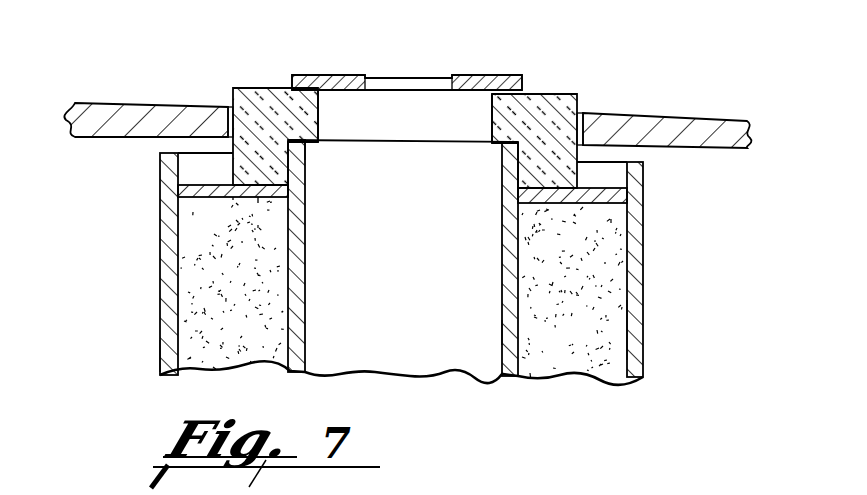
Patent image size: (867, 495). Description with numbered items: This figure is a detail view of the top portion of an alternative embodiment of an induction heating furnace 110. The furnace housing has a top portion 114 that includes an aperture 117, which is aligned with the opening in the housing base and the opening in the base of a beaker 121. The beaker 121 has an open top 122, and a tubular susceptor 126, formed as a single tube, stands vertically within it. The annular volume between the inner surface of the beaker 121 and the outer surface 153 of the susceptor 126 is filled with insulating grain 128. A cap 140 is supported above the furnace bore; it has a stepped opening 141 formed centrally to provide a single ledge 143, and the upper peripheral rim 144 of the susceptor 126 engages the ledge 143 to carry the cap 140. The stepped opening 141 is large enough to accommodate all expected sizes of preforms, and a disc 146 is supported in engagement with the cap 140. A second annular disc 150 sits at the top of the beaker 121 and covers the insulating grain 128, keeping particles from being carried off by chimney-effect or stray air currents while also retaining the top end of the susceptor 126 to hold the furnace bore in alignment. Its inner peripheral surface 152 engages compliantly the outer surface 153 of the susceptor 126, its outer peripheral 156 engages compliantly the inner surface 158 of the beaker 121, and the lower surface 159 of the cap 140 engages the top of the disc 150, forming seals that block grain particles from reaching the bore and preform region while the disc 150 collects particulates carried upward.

The furnace 110 is at (549, 407).
The top portion 114 is at (707, 113).
The aperture 117 is at (583, 115).
The beaker 121 is at (645, 338).
The open top 122 is at (643, 198).
The tubular susceptor 126 is at (305, 303).
The insulating grain 128 is at (195, 287).
The cap 140 is at (550, 93).
The stepped opening 141 is at (407, 113).
The ledge 143 is at (316, 144).
The upper peripheral rim 144 is at (465, 143).
The disc 146 is at (367, 33).
The second annular disc 150 is at (233, 198).
The inner peripheral surface 152 is at (504, 197).
The outer surface 153 is at (505, 335).
The outer peripheral 156 is at (173, 190).
The inner surface 158 is at (165, 354).
The lower surface 159 is at (258, 203).